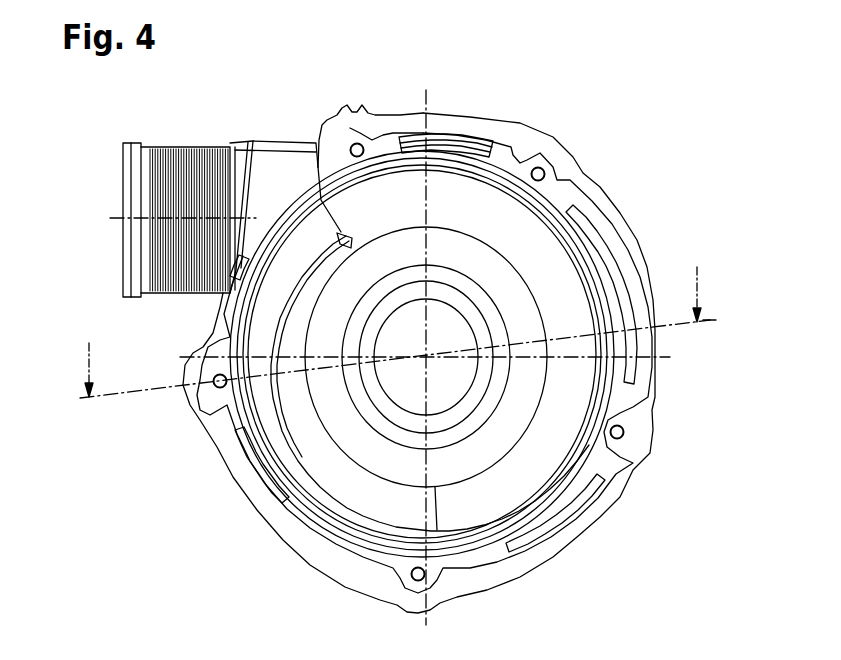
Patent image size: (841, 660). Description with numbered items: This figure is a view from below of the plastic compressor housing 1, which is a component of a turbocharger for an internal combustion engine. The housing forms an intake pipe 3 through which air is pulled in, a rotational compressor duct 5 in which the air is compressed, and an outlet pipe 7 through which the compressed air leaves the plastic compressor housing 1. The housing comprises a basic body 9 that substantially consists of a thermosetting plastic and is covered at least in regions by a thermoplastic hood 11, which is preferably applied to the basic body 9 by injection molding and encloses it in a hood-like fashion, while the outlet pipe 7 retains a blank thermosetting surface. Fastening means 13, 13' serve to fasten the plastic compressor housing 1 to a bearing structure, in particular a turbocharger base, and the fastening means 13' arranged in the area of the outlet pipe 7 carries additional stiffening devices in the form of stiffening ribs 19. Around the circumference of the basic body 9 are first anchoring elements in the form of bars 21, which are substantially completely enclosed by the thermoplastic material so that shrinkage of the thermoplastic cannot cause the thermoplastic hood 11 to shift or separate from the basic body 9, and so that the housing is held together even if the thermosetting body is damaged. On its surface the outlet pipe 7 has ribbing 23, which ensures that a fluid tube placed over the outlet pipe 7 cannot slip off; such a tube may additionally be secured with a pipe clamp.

The plastic compressor housing 1 is at (391, 332).
The intake pipe 3 is at (456, 339).
The rotational compressor duct 5 is at (456, 209).
The outlet pipe 7 is at (188, 185).
The basic body 9 is at (567, 278).
The thermoplastic hood 11 is at (504, 145).
The fastening means 13 is at (470, 332).
The fastening means 13' is at (363, 122).
The stiffening ribs 19 is at (366, 110).
The bars 21 is at (466, 140).
The ribbing 23 is at (172, 150).